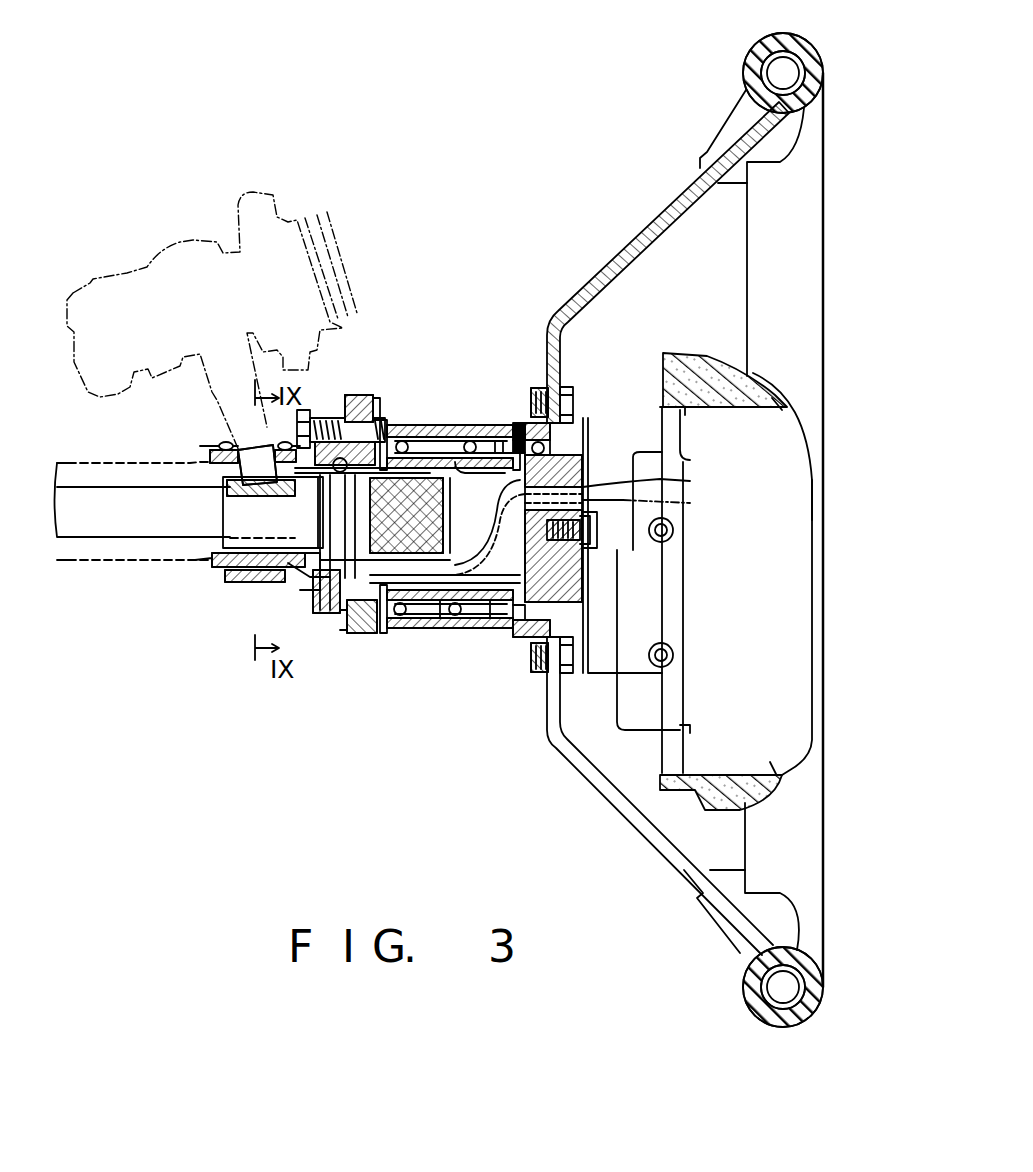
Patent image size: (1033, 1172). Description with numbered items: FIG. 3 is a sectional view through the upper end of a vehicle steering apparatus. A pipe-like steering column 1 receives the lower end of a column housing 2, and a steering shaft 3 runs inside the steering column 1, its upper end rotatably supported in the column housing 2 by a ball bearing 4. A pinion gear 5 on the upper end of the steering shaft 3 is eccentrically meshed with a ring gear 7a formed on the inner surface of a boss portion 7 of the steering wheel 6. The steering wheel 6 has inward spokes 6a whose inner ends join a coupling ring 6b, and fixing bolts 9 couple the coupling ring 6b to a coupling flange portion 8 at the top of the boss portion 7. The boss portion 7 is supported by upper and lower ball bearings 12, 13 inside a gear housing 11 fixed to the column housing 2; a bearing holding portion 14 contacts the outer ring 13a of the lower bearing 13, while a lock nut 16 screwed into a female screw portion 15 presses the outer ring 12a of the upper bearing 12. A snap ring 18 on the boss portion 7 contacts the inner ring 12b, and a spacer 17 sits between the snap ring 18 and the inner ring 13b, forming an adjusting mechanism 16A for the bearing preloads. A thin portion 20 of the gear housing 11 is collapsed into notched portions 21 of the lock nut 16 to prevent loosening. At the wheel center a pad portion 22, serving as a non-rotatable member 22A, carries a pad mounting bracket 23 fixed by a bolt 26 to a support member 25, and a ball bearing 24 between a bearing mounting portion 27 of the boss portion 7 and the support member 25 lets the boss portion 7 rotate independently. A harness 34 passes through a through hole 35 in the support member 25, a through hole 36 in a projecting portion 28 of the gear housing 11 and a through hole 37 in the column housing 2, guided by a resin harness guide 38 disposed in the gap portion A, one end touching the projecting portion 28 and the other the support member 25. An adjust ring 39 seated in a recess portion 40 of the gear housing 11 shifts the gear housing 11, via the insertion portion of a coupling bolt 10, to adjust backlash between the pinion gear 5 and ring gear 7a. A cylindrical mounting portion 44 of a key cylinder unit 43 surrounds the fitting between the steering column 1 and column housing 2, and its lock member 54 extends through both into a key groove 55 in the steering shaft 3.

The steering column 1 is at (90, 565).
The column housing 2 is at (297, 575).
The steering shaft 3 is at (110, 495).
The ball bearing 4 is at (325, 418).
The pinion gear 5 is at (349, 521).
The steering wheel 6 is at (745, 980).
The inward spokes 6a is at (648, 236).
The coupling ring 6b is at (547, 680).
The boss portion 7 is at (530, 660).
The ring gear 7a is at (460, 515).
The coupling flange portion 8 is at (538, 388).
The fixing bolts 9 is at (570, 388).
The coupling bolt 10 is at (305, 410).
The gear housing 11 is at (374, 408).
The ball bearing 12 is at (505, 450).
The outer ring 12a is at (573, 395).
The inner ring 12b is at (462, 432).
The ball bearing 13 is at (420, 428).
The outer ring 13a is at (412, 430).
The inner ring 13b is at (445, 428).
The bearing holding portion 14 is at (385, 432).
The female screw portion 15 is at (462, 630).
The lock nut 16 is at (500, 630).
The adjusting mechanism 16A is at (492, 632).
The spacer 17 is at (415, 632).
The snap ring 18 is at (438, 632).
The thin portion 20 is at (475, 467).
The notched portions 21 is at (487, 522).
The pad portion 22 is at (790, 440).
The non-rotatable member 22A is at (823, 501).
The pad mounting bracket 23 is at (607, 673).
The ball bearing 24 is at (552, 447).
The support member 25 is at (595, 470).
The bolt 26 is at (600, 552).
The bearing mounting portion 27 is at (560, 428).
The projecting portion 28 is at (380, 635).
The harness 34 is at (653, 512).
The through hole 35 is at (653, 482).
The through hole 36 is at (362, 636).
The through hole 37 is at (310, 600).
The harness guide 38 is at (470, 572).
The adjust ring 39 is at (343, 632).
The recess portion 40 is at (357, 395).
The key cylinder unit 43 is at (230, 445).
The mounting portion 44 is at (228, 583).
The lock member 54 is at (273, 512).
The key groove 55 is at (227, 488).
The gap portion A is at (464, 545).